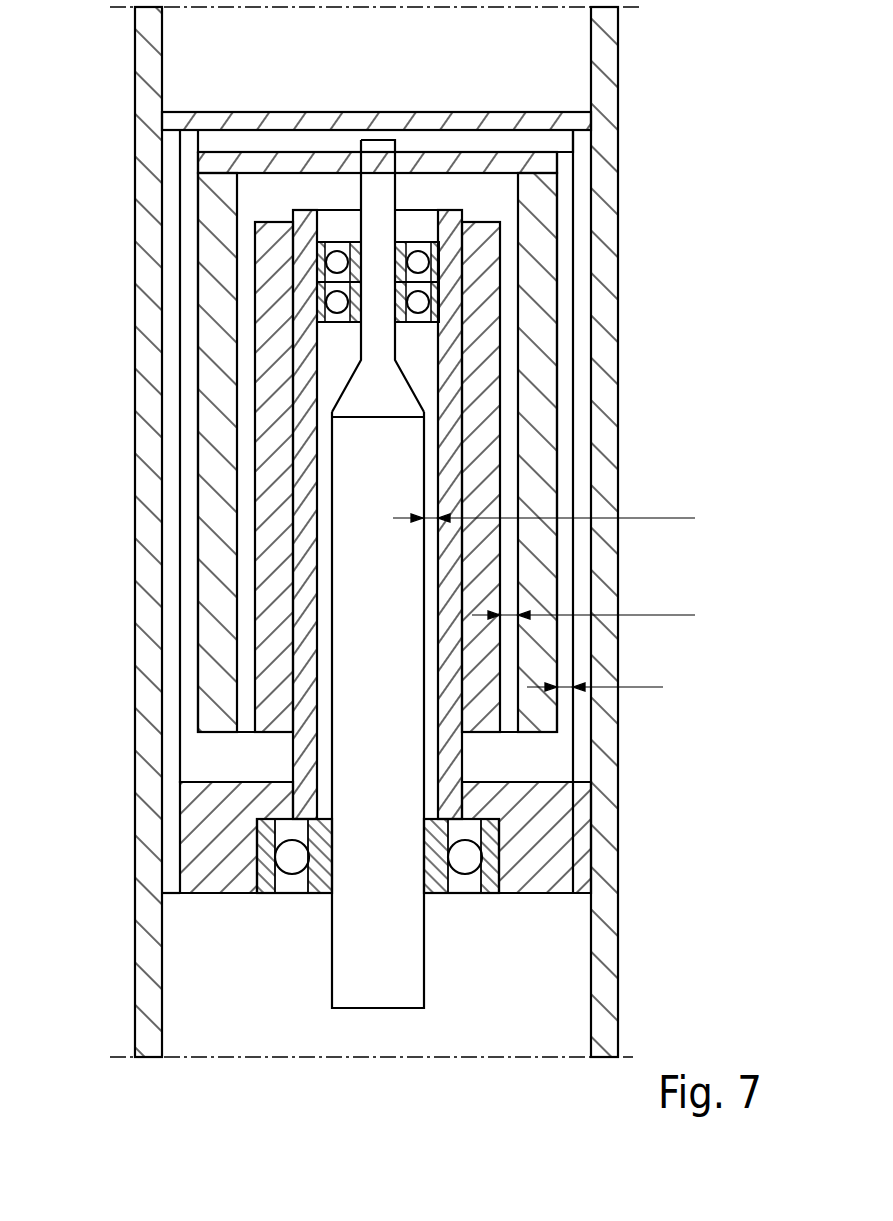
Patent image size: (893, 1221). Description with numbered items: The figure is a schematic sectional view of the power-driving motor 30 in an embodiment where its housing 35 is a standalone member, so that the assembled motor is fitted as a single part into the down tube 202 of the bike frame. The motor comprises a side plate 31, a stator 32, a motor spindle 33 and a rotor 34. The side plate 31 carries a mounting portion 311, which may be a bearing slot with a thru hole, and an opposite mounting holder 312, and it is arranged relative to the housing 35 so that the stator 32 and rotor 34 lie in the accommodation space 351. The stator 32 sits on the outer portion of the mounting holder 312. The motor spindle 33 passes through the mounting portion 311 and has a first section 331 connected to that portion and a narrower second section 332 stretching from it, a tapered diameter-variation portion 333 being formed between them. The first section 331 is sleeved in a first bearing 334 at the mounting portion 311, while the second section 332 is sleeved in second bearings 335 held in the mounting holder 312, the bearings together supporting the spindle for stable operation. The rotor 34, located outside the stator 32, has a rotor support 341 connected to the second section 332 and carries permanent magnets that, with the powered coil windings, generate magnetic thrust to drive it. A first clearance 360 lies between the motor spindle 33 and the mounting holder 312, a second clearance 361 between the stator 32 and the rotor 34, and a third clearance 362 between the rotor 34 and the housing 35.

The down tube 202 is at (146, 111).
The power-driving motor 30 is at (540, 143).
The side plate 31 is at (218, 876).
The mounting portion 311 is at (512, 857).
The mounting holder 312 is at (283, 570).
The stator 32 is at (483, 327).
The motor spindle 33 is at (322, 656).
The first section 331 is at (360, 856).
The second section 332 is at (368, 232).
The diameter-variation portion 333 is at (350, 400).
The first bearing 334 is at (488, 883).
The second bearing 335 is at (322, 307).
The rotor 34 is at (550, 240).
The rotor support 341 is at (552, 165).
The housing 35 is at (425, 123).
The accommodation space 351 is at (272, 142).
The first clearance 360 is at (544, 506).
The second clearance 361 is at (583, 603).
The third clearance 362 is at (595, 676).